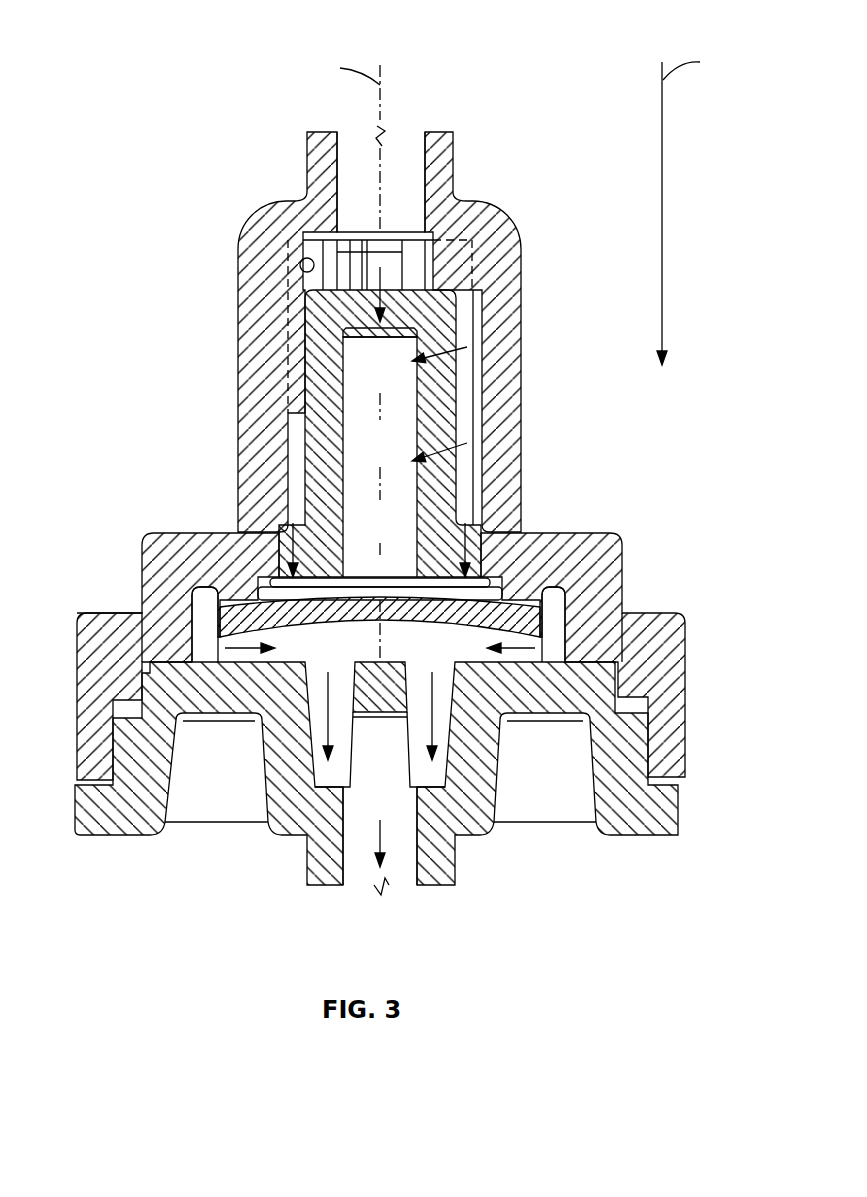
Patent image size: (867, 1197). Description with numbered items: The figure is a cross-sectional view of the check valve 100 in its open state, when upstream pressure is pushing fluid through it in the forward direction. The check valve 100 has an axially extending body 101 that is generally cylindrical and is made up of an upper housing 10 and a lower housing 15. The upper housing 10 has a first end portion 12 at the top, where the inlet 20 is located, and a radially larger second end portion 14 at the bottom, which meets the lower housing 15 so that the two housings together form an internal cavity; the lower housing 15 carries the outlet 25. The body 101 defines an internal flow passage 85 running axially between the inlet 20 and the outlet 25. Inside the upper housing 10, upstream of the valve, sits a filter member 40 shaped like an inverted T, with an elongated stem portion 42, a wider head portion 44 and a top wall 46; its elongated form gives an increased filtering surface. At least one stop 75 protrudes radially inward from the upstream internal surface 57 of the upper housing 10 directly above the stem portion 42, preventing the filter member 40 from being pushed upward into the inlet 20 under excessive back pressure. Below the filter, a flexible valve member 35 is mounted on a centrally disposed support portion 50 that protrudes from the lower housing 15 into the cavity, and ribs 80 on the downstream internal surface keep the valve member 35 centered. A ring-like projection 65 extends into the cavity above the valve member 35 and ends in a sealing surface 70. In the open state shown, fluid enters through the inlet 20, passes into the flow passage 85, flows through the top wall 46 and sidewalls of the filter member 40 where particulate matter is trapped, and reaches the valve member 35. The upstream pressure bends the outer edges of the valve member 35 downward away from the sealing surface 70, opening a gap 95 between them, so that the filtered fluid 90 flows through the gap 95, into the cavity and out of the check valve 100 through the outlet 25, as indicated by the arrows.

The check valve 100 is at (200, 37).
The upper housing 10 is at (552, 292).
The first end portion 12 is at (238, 209).
The second end portion 14 is at (642, 592).
The lower housing 15 is at (696, 822).
The inlet 20 is at (395, 217).
The outlet 25 is at (395, 812).
The flexible valve member 35 is at (224, 627).
The filter member 40 is at (470, 414).
The stem portion 42 is at (340, 414).
The head portion 44 is at (340, 490).
The top wall 46 is at (317, 377).
The support portion 50 is at (316, 668).
The upstream internal surface 57 is at (300, 262).
The projection 65 is at (293, 523).
The sealing surface 70 is at (489, 582).
The stop 75 is at (345, 255).
The ribs 80 is at (204, 656).
The internal flow passage 85 is at (394, 373).
The filtered fluid 90 is at (222, 612).
The gap 95 is at (256, 605).
The body 101 is at (216, 288).